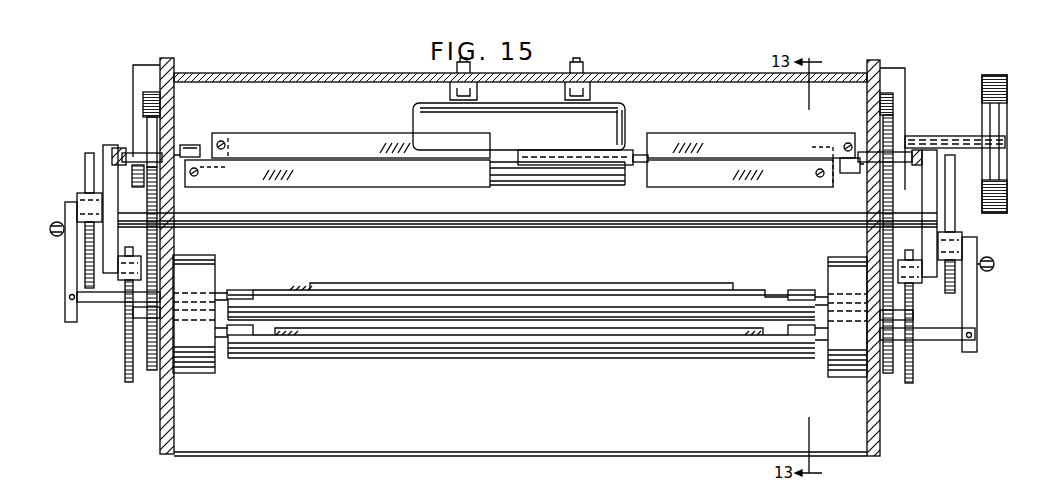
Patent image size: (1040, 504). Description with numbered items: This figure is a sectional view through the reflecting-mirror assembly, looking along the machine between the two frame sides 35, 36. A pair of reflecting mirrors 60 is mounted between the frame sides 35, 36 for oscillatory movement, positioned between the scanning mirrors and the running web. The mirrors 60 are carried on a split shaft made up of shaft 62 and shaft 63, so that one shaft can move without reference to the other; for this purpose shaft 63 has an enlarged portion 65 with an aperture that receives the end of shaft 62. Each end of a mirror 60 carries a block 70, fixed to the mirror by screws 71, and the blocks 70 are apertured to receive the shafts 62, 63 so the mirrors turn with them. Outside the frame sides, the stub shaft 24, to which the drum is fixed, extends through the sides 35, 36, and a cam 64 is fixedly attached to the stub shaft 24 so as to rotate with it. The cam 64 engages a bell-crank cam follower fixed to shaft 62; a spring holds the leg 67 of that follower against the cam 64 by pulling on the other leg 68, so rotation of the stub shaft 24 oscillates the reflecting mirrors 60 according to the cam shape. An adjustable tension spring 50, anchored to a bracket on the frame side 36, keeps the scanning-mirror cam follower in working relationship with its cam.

The stub shaft 24 is at (100, 300).
The frame side 35 is at (166, 421).
The frame side 36 is at (877, 422).
The adjustable tension spring 50 is at (50, 229).
The reflecting mirror 60 is at (356, 140).
The shaft 62 is at (130, 152).
The shaft 63 is at (863, 174).
The cam 64 is at (124, 375).
The enlarged portion 65 is at (628, 166).
The leg 67 is at (112, 204).
The leg 68 is at (116, 150).
The block 70 is at (198, 145).
The screw 71 is at (226, 145).